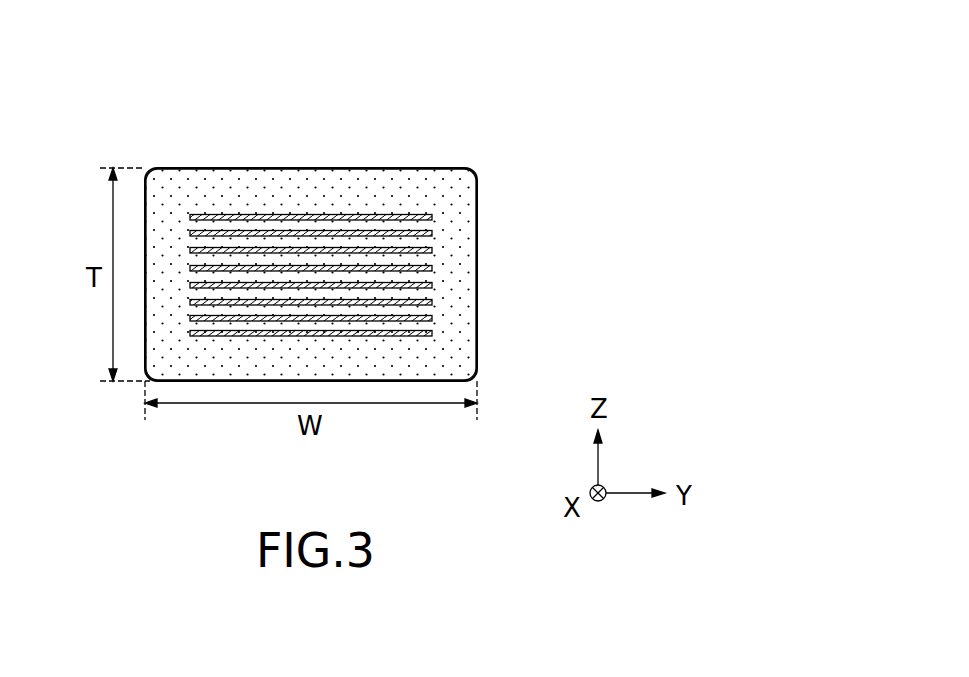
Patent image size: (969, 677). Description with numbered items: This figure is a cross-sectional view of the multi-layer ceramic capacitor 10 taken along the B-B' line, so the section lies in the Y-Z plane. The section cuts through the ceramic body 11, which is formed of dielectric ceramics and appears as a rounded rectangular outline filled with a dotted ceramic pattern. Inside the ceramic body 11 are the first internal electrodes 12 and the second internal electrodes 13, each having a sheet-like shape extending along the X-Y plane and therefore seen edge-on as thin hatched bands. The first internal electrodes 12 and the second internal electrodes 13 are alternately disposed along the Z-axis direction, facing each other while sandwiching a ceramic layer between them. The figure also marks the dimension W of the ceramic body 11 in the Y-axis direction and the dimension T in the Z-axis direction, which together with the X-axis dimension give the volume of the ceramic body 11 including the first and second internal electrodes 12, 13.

The multi-layer ceramic capacitor 10 is at (112, 74).
The ceramic body 11 is at (364, 100).
The first internal electrodes 12 is at (212, 316).
The second internal electrodes 13 is at (342, 331).